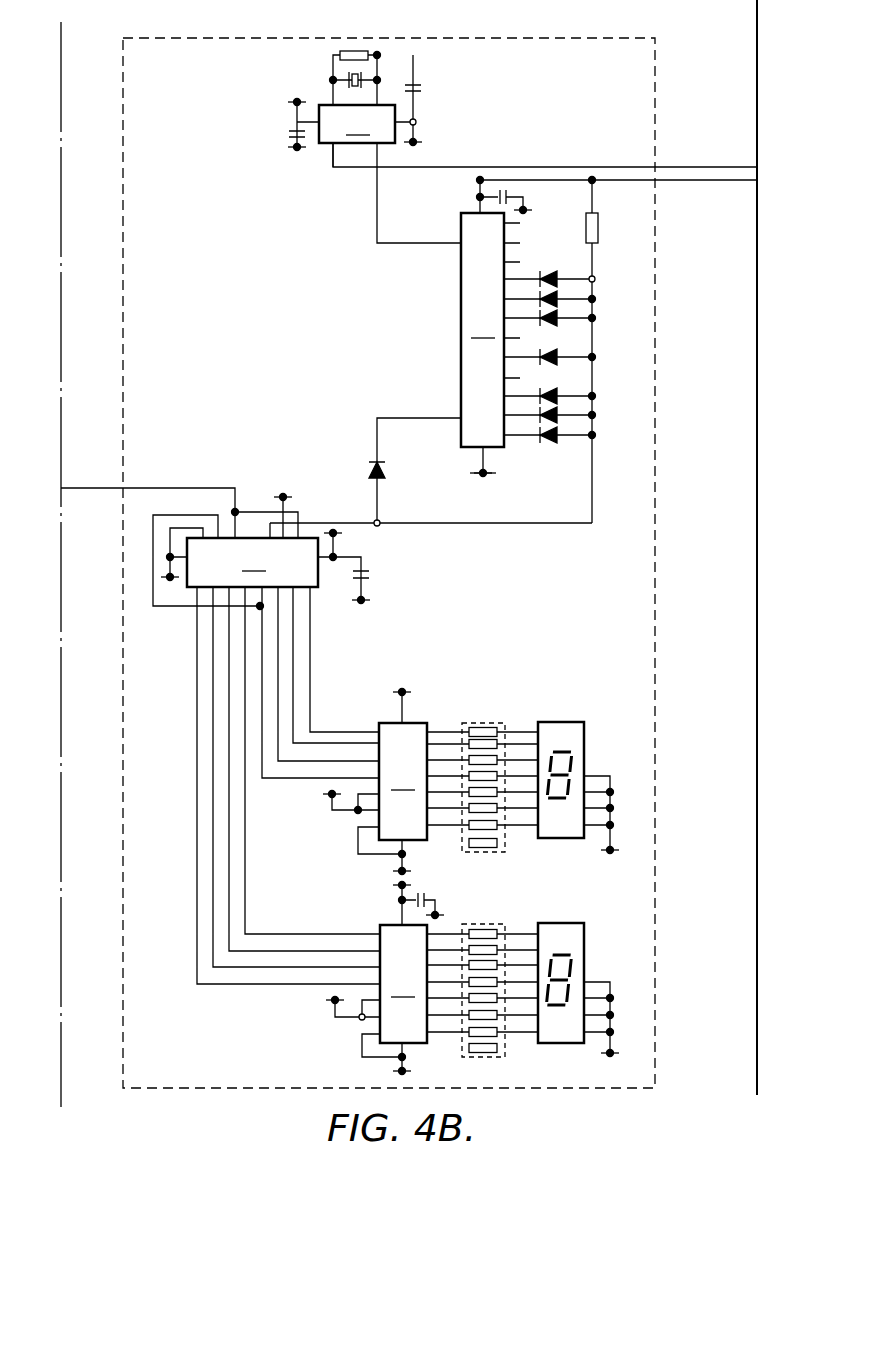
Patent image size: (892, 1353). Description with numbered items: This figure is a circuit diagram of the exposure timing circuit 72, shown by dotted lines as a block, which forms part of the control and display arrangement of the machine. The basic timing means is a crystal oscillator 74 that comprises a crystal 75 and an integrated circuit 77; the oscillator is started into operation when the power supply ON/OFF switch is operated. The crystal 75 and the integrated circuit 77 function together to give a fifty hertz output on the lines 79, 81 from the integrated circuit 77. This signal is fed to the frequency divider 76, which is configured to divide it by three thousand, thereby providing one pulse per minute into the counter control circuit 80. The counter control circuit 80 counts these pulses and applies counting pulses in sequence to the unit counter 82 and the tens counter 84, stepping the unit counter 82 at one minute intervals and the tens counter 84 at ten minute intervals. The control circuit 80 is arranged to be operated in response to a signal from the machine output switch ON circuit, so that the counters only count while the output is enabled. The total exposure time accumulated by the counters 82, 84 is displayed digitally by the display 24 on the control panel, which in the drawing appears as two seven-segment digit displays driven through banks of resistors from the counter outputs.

The exposure timing circuit 72 is at (658, 67).
The crystal oscillator 74 is at (325, 95).
The crystal 75 is at (363, 78).
The integrated circuit 77 is at (325, 140).
The output line 79 is at (333, 172).
The output line 81 is at (375, 206).
The frequency divider 76 is at (470, 296).
The counter control circuit 80 is at (335, 610).
The unit counter 82 is at (432, 697).
The tens counter 84 is at (397, 942).
The display 24 is at (558, 840).